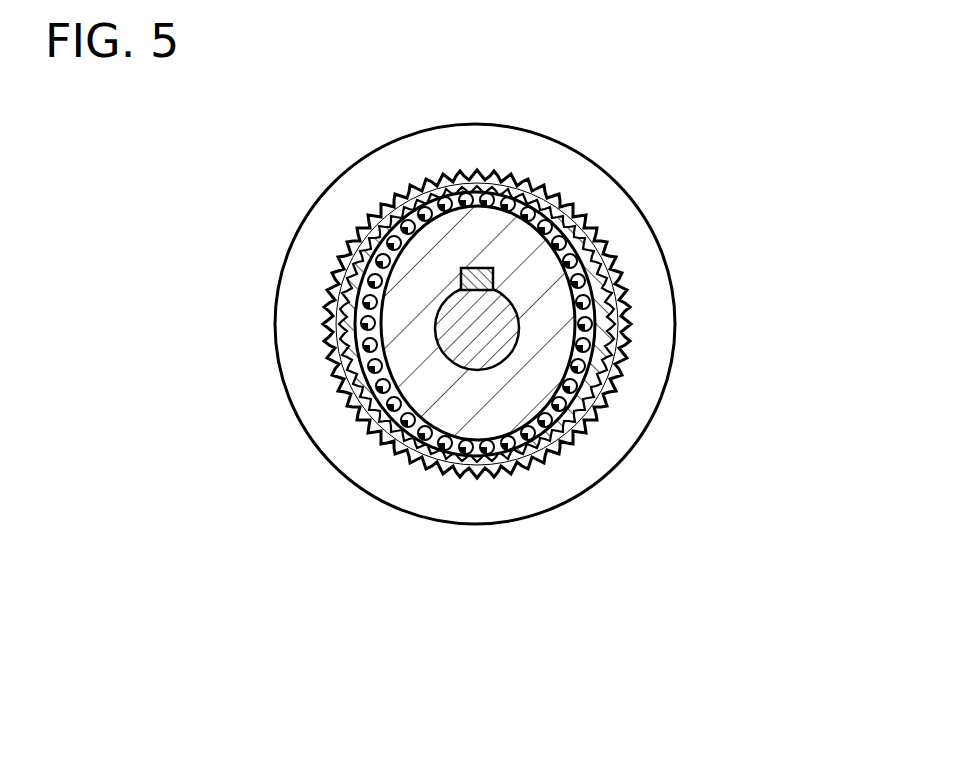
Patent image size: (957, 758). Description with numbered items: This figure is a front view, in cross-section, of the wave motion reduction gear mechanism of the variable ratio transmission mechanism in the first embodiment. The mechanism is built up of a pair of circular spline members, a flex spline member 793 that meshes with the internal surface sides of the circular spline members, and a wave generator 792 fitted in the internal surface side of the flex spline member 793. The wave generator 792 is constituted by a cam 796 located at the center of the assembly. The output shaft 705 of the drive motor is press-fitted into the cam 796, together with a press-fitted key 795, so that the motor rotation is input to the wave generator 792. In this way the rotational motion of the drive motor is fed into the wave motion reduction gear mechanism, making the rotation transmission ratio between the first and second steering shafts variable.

The output shaft 705 is at (492, 322).
The wave generator 792 is at (535, 183).
The flex spline member 793 is at (605, 387).
The key 795 is at (461, 270).
The cam 796 is at (405, 327).